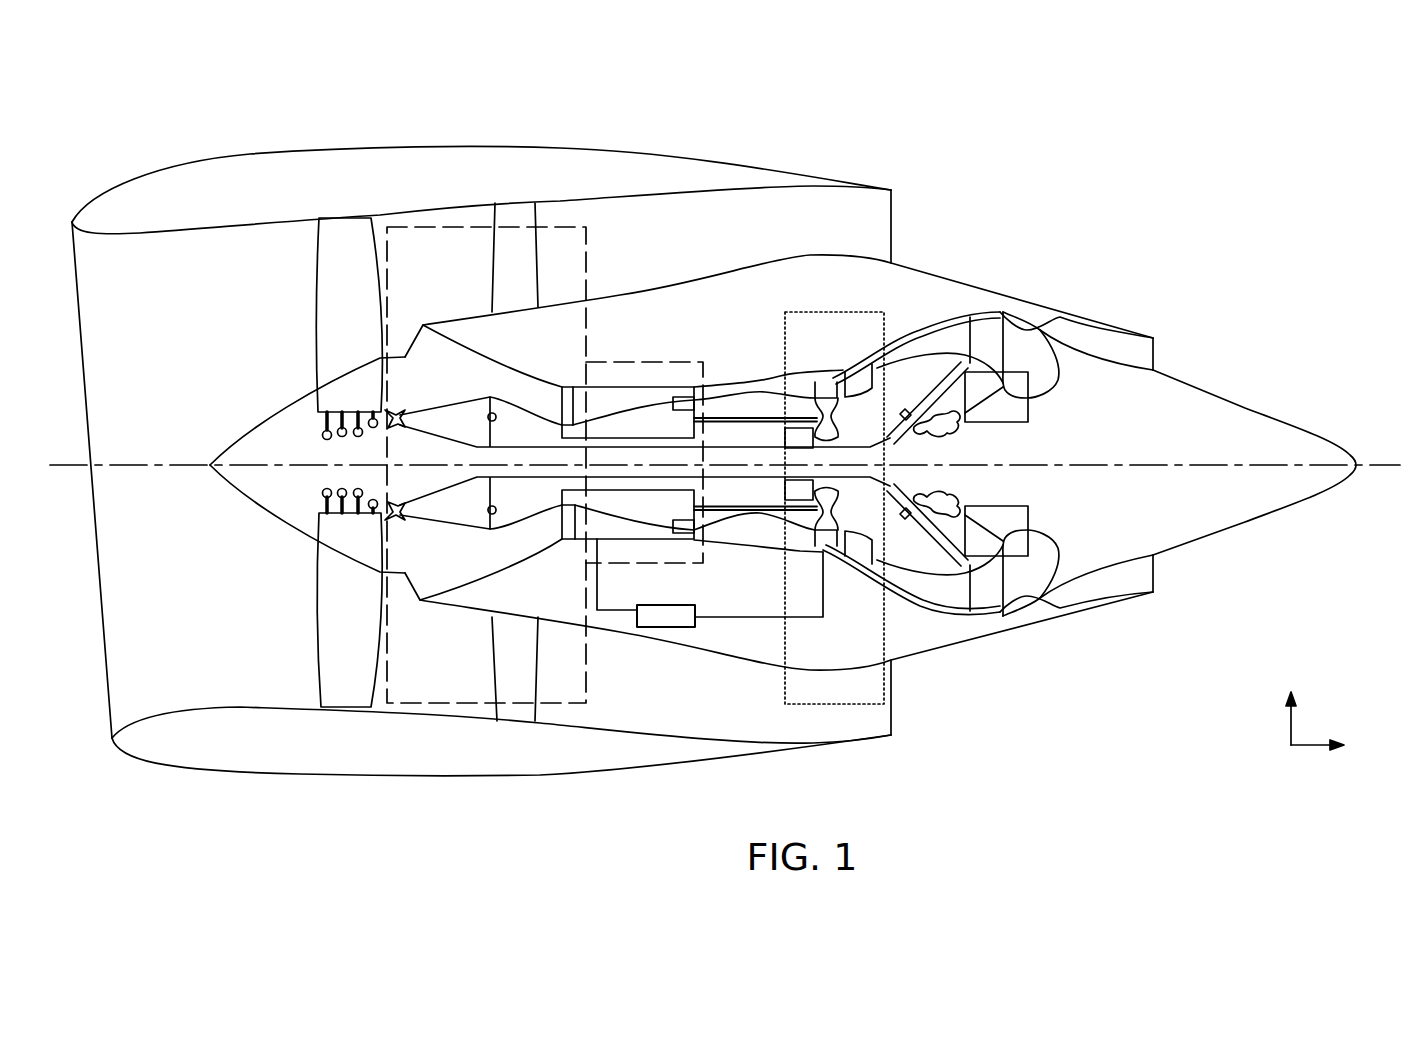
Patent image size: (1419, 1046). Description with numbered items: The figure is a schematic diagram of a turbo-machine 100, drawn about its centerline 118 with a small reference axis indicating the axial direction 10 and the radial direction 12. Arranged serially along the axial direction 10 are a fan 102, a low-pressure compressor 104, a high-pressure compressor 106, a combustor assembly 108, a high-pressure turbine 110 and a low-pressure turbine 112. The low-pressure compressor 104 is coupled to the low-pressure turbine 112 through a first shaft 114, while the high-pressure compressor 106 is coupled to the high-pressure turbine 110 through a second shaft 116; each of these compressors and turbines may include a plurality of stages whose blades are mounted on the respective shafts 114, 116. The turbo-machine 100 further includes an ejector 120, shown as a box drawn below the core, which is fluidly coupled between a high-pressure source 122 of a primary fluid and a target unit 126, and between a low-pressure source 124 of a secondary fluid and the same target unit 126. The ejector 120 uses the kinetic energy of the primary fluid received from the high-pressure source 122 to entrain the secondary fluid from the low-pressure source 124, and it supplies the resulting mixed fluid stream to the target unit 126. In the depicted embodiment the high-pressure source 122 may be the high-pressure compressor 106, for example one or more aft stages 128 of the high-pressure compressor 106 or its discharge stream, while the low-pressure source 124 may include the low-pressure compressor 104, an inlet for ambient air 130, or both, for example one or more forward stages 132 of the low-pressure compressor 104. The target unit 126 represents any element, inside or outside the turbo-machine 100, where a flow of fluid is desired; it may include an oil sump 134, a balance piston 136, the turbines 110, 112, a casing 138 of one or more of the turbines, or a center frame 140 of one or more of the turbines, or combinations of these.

The turbo-machine 100 is at (1300, 94).
The fan 102 is at (323, 298).
The low-pressure compressor 104 is at (455, 347).
The high-pressure compressor 106 is at (597, 400).
The combustor assembly 108 is at (770, 391).
The high-pressure turbine 110 is at (832, 540).
The low-pressure turbine 112 is at (923, 340).
The first shaft 114 is at (633, 477).
The second shaft 116 is at (763, 513).
The centerline 118 is at (1118, 462).
The ejector 120 is at (667, 605).
The high-pressure source 122 is at (676, 398).
The low-pressure source 124 is at (562, 226).
The target unit 126 is at (785, 691).
The aft stages 128 is at (710, 368).
The inlet for ambient air 130 is at (458, 670).
The forward stages 132 is at (567, 392).
The oil sump 134 is at (797, 436).
The balance piston 136 is at (1013, 505).
The casing 138 is at (847, 360).
The center frame 140 is at (866, 542).
The axial direction 10 is at (1313, 760).
The radial direction 12 is at (1290, 730).